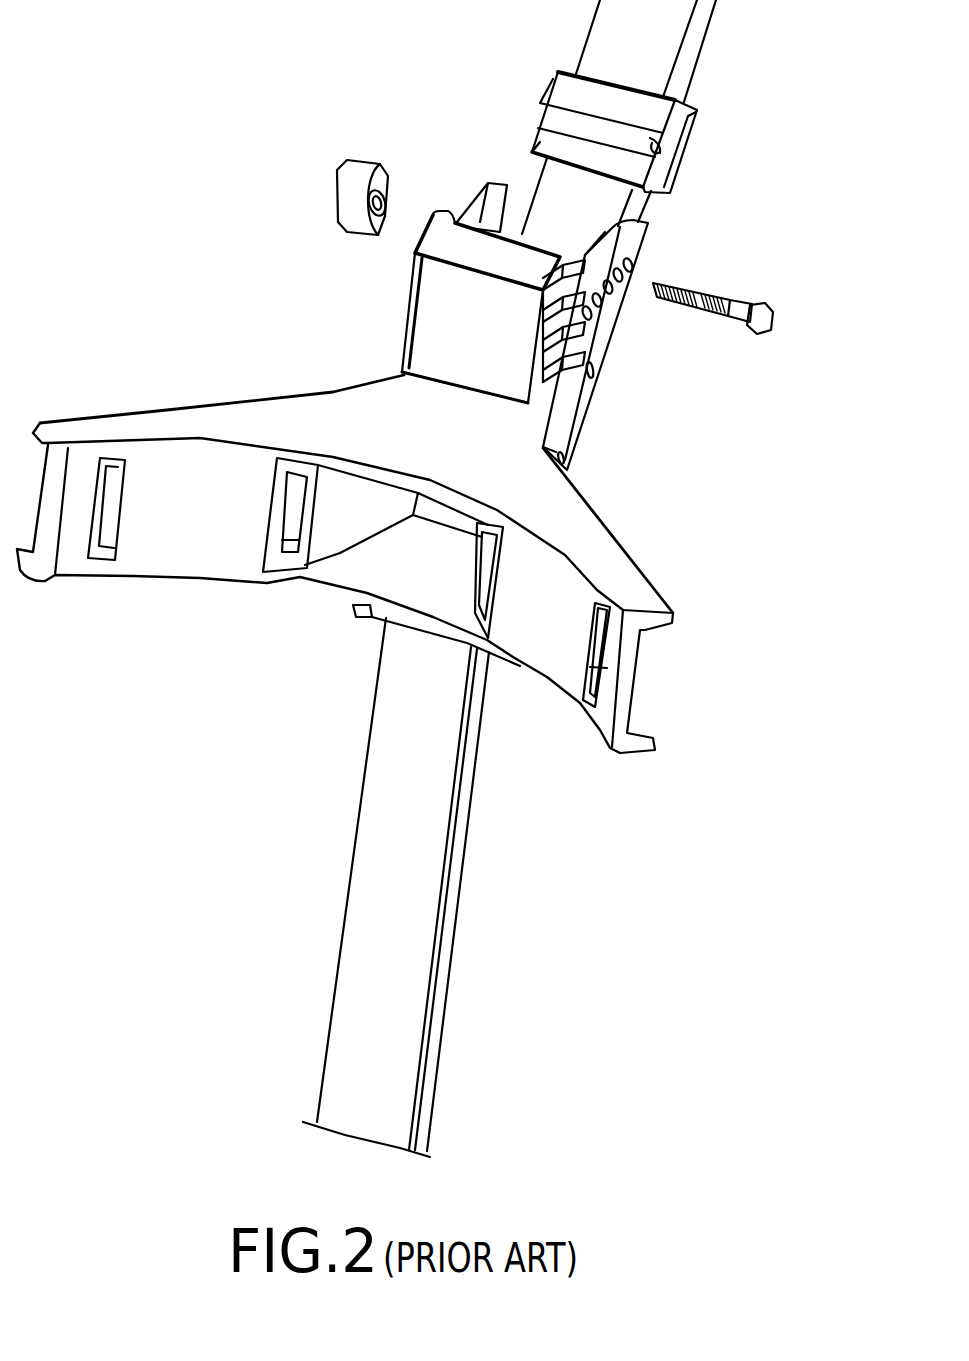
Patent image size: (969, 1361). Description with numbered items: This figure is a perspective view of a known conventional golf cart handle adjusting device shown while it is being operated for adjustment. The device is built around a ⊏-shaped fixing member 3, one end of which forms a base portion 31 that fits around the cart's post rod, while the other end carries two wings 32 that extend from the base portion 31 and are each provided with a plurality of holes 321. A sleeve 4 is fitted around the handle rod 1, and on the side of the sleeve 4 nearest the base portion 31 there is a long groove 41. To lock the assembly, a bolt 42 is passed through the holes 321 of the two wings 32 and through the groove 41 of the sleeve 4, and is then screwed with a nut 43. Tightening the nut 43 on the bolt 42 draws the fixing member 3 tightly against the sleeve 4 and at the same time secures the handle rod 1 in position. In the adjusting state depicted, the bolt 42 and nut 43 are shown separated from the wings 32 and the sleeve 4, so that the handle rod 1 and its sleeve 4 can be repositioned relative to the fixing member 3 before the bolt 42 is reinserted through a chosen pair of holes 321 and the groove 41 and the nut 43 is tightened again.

The handle rod 1 is at (677, 57).
The fixing member 3 is at (376, 333).
The base portion 31 is at (495, 382).
The wings 32 is at (480, 196).
The holes 321 is at (616, 296).
The sleeve 4 is at (699, 133).
The long groove 41 is at (655, 145).
The bolt 42 is at (737, 320).
The nut 43 is at (360, 158).